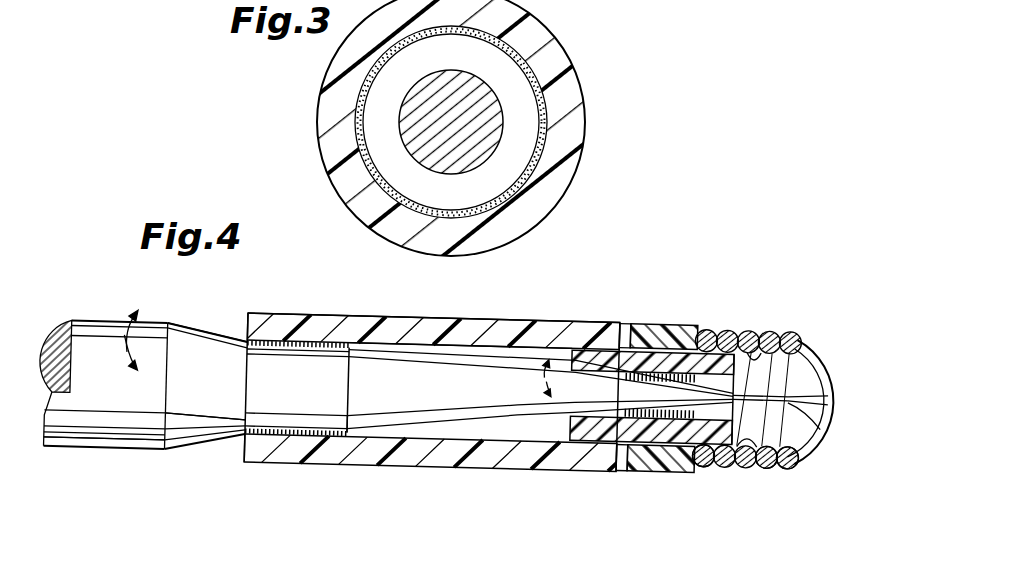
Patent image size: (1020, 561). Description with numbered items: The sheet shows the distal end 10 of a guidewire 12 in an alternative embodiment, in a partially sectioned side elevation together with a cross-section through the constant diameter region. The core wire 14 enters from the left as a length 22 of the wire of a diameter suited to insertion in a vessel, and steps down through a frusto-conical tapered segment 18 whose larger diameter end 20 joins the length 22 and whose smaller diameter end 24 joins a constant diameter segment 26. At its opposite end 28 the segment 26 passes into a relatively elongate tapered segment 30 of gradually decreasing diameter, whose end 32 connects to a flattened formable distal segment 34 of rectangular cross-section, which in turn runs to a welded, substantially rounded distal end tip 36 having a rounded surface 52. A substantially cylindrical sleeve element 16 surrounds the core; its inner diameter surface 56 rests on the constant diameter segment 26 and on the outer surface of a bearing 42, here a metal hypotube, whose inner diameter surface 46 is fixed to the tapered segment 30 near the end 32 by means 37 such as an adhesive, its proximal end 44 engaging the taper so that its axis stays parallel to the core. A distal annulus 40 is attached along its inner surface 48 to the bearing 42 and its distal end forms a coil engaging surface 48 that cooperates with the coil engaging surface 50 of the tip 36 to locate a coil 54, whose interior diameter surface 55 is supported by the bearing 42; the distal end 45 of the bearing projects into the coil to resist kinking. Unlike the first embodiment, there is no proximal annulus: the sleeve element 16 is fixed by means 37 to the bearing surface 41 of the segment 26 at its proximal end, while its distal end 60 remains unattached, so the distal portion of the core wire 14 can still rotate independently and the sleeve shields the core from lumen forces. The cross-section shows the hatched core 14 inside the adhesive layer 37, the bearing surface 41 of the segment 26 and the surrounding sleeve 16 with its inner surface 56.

In FIG. 4, the distal end 10 is at (706, 289).
In FIG. 4, the guidewire 12 is at (102, 330).
In FIG. 4, the core wire 14 is at (238, 334).
In FIG. 3, the sleeve element 16 is at (567, 135).
In FIG. 4, the sleeve element 16 is at (526, 330).
In FIG. 4, the tapered segment 18 is at (221, 395).
In FIG. 4, the larger diameter end 20 is at (160, 448).
In FIG. 4, the length of the wire 22 is at (126, 395).
In FIG. 4, the smaller diameter end 24 is at (246, 410).
In FIG. 3, the constant diameter segment 26 is at (522, 186).
In FIG. 4, the constant diameter segment 26 is at (311, 395).
In FIG. 4, the end of the constant diameter segment 28 is at (350, 415).
In FIG. 3, the elongate tapered segment 30 is at (512, 157).
In FIG. 4, the elongate tapered segment 30 is at (451, 404).
In FIG. 4, the end of the elongate tapered segment 32 is at (795, 417).
In FIG. 4, the formable distal segment 34 is at (797, 400).
In FIG. 4, the rounded distal end tip 36 is at (813, 360).
In FIG. 3, the attachment means 37 is at (464, 110).
In FIG. 4, the attachment means 37 is at (266, 428).
In FIG. 4, the distal annulus 40 is at (664, 462).
In FIG. 3, the bearing surface 41 is at (355, 135).
In FIG. 4, the bearing 42 is at (715, 450).
In FIG. 4, the proximal end of the bearing 44 is at (582, 445).
In FIG. 4, the distal end of the bearing 45 is at (742, 435).
In FIG. 4, the inner diameter surface of the bearing 46 is at (640, 327).
In FIG. 4, the coil engaging surface 48 is at (706, 332).
In FIG. 4, the coil engaging surface of the end tip 50 is at (770, 468).
In FIG. 4, the rounded surface 52 is at (833, 387).
In FIG. 4, the coil 54 is at (800, 452).
In FIG. 4, the interior diameter surface of the coil 55 is at (758, 355).
In FIG. 3, the inner diameter surface of the sleeve element 56 is at (566, 108).
In FIG. 4, the inner diameter surface of the sleeve element 56 is at (447, 347).
In FIG. 4, the distal end of the sleeve element 60 is at (626, 463).